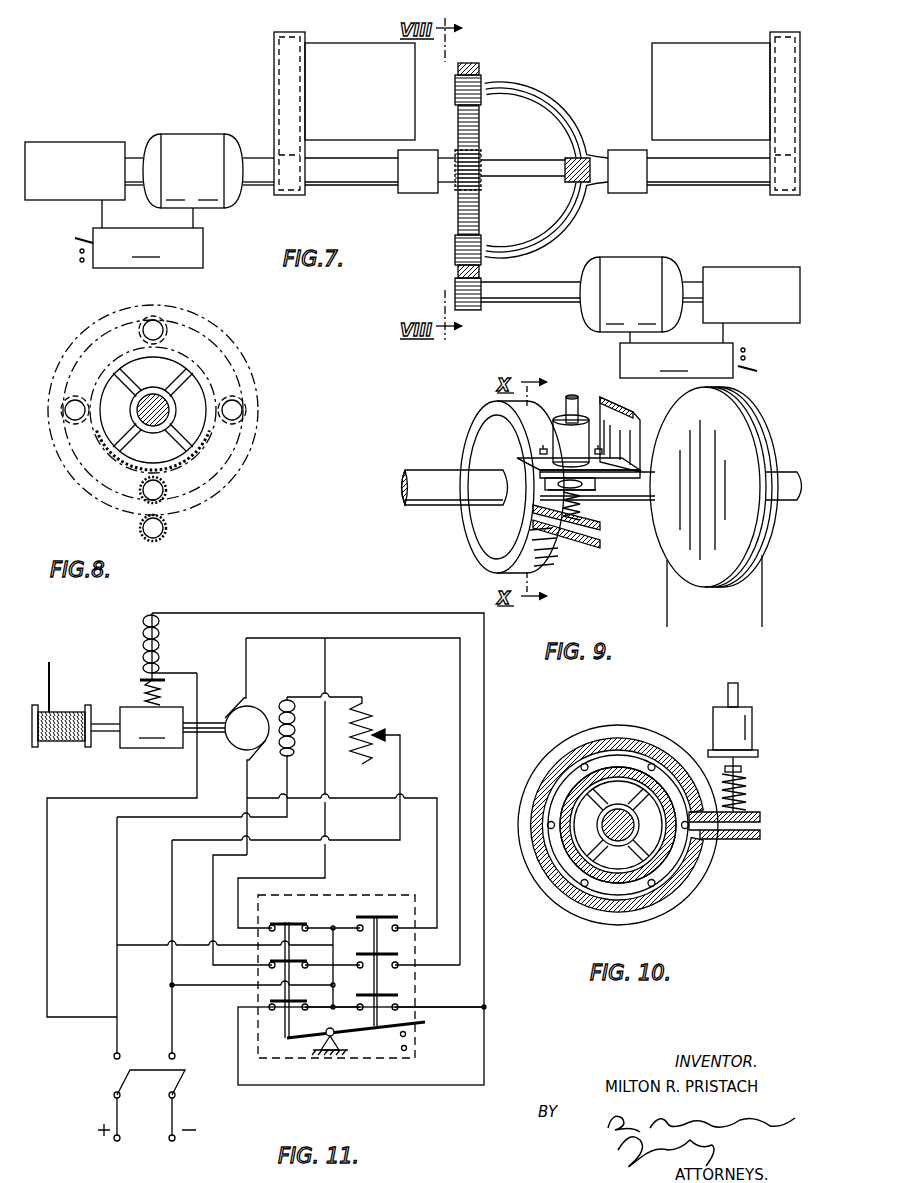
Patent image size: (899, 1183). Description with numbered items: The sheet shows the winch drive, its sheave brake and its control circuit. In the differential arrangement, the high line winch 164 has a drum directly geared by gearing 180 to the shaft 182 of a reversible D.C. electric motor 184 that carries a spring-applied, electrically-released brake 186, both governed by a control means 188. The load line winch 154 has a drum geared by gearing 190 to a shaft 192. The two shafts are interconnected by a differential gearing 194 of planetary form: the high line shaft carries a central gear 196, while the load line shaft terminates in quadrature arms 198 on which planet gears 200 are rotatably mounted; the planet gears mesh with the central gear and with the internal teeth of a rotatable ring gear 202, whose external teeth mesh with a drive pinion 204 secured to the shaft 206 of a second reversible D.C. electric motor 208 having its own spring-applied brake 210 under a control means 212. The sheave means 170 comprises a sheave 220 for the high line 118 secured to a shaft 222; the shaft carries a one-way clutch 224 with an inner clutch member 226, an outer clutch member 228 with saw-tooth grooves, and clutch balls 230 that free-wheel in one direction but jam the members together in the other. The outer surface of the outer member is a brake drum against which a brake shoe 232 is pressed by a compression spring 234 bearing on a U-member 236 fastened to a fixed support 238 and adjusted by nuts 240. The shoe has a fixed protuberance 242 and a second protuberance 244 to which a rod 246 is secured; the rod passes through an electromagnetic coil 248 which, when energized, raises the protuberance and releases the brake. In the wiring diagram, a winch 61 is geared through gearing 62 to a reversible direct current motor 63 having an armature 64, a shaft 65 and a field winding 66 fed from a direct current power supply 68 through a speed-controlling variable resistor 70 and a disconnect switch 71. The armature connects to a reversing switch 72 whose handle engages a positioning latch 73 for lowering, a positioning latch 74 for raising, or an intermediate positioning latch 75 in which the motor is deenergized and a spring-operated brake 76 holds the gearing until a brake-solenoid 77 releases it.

In FIG. 7, the load line winch 154 is at (716, 48).
In FIG. 7, the high line winch 164 is at (360, 48).
In FIG. 7, the gearing 180 is at (278, 82).
In FIG. 7, the shaft 182 is at (351, 186).
In FIG. 8, the shaft 182 is at (153, 396).
In FIG. 7, the reversible D.C. electric motor 184 is at (197, 134).
In FIG. 7, the spring-applied, electrically-released brake 186 is at (72, 142).
In FIG. 7, the control means 188 is at (139, 234).
In FIG. 7, the gearing 190 is at (785, 198).
In FIG. 7, the shaft 192 is at (709, 190).
In FIG. 7, the differential gearing 194 is at (443, 252).
In FIG. 7, the central gear 196 is at (533, 178).
In FIG. 8, the central gear 196 is at (207, 447).
In FIG. 7, the quadrature arms 198 is at (547, 110).
In FIG. 7, the planet gears 200 is at (483, 81).
In FIG. 8, the planet gears 200 is at (161, 332).
In FIG. 7, the ring gear 202 is at (478, 65).
In FIG. 8, the ring gear 202 is at (193, 509).
In FIG. 7, the drive pinion 204 is at (484, 308).
In FIG. 8, the drive pinion 204 is at (165, 536).
In FIG. 7, the shaft 206 is at (532, 290).
In FIG. 7, the reversible D.C. electric motor 208 is at (645, 262).
In FIG. 7, the spring-applied, electrically-released brake 210 is at (742, 268).
In FIG. 7, the control means 212 is at (688, 350).
In FIG. 9, the high line 118 is at (756, 597).
In FIG. 9, the sheave means 170 is at (614, 576).
In FIG. 9, the sheave 220 is at (705, 456).
In FIG. 10, the sheave 220 is at (594, 733).
In FIG. 9, the shaft 222 is at (432, 474).
In FIG. 10, the shaft 222 is at (618, 825).
In FIG. 10, the one-way clutch 224 is at (667, 879).
In FIG. 10, the inner clutch member 226 is at (560, 874).
In FIG. 10, the outer clutch member 228 is at (555, 778).
In FIG. 10, the clutch balls 230 is at (660, 886).
In FIG. 10, the brake shoe 232 is at (658, 717).
In FIG. 10, the compression spring 234 is at (752, 795).
In FIG. 9, the U-member 236 is at (596, 484).
In FIG. 10, the U-member 236 is at (748, 770).
In FIG. 9, the fixed support 238 is at (618, 402).
In FIG. 10, the nuts 240 is at (758, 757).
In FIG. 9, the fixed protuberance 242 is at (601, 548).
In FIG. 10, the fixed protuberance 242 is at (748, 840).
In FIG. 9, the second protuberance 244 is at (600, 524).
In FIG. 10, the second protuberance 244 is at (763, 808).
In FIG. 9, the rod 246 is at (570, 396).
In FIG. 10, the rod 246 is at (739, 690).
In FIG. 10, the electromagnetic coil 248 is at (715, 722).
In FIG. 11, the winch 61 is at (62, 712).
In FIG. 11, the gearing 62 is at (151, 727).
In FIG. 11, the reversible direct current motor 63 is at (260, 700).
In FIG. 11, the armature 64 is at (232, 742).
In FIG. 11, the shaft 65 is at (212, 720).
In FIG. 11, the field winding 66 is at (294, 728).
In FIG. 11, the direct current power supply 68 is at (147, 1119).
In FIG. 11, the speed-controlling variable resistor 70 is at (366, 723).
In FIG. 11, the disconnect switch 71 is at (149, 1084).
In FIG. 11, the reversing switch 72 is at (358, 904).
In FIG. 11, the positioning latch 73 is at (412, 1050).
In FIG. 11, the positioning latch 74 is at (404, 1022).
In FIG. 11, the positioning latch 75 is at (402, 1034).
In FIG. 11, the spring-operated brake 76 is at (140, 685).
In FIG. 11, the brake-solenoid 77 is at (160, 652).